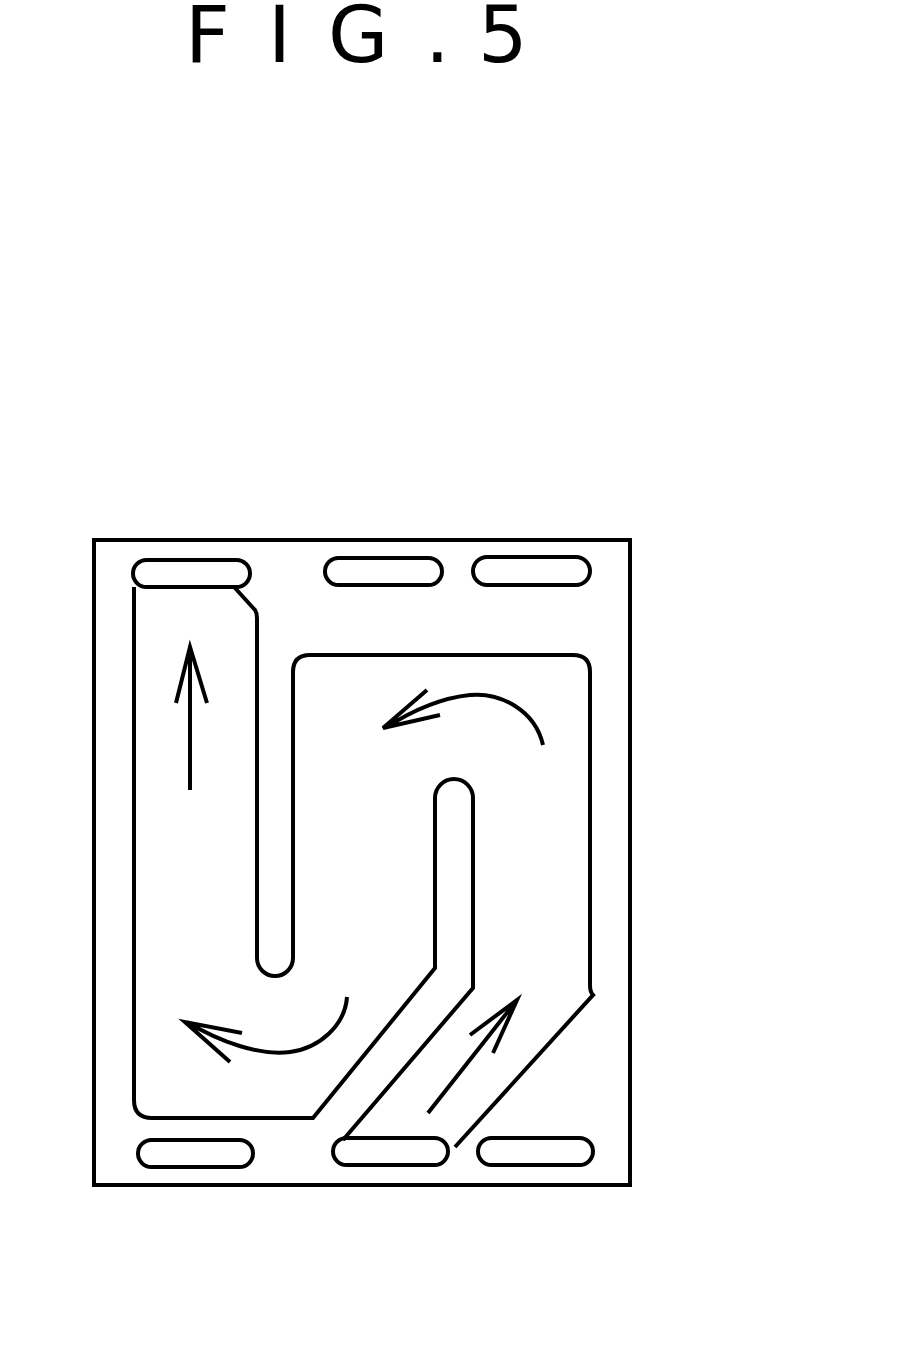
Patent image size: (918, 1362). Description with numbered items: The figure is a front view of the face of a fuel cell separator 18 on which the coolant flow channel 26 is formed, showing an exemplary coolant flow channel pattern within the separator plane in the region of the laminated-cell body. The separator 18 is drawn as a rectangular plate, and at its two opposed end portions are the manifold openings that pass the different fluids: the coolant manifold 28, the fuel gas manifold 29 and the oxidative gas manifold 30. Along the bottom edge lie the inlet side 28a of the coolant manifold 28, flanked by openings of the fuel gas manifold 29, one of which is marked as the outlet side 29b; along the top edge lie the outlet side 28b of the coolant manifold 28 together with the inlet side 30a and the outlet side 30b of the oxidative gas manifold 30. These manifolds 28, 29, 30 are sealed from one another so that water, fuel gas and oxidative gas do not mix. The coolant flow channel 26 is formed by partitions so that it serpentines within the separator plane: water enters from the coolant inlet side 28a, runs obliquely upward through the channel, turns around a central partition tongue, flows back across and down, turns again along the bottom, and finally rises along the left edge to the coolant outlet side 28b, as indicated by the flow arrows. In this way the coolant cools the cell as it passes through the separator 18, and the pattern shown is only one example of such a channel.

The separator 18 is at (632, 915).
The coolant flow channel 26 is at (592, 747).
The coolant manifold 28 is at (300, 865).
The coolant manifold inlet side 28a is at (388, 1152).
The coolant manifold outlet side 28b is at (180, 572).
The fuel gas manifold 29 is at (406, 1202).
The fuel gas manifold outlet side 29b is at (188, 1152).
The oxidative gas manifold 30 is at (521, 523).
The oxidative gas manifold inlet side 30a is at (383, 572).
The oxidative gas manifold outlet side 30b is at (560, 572).